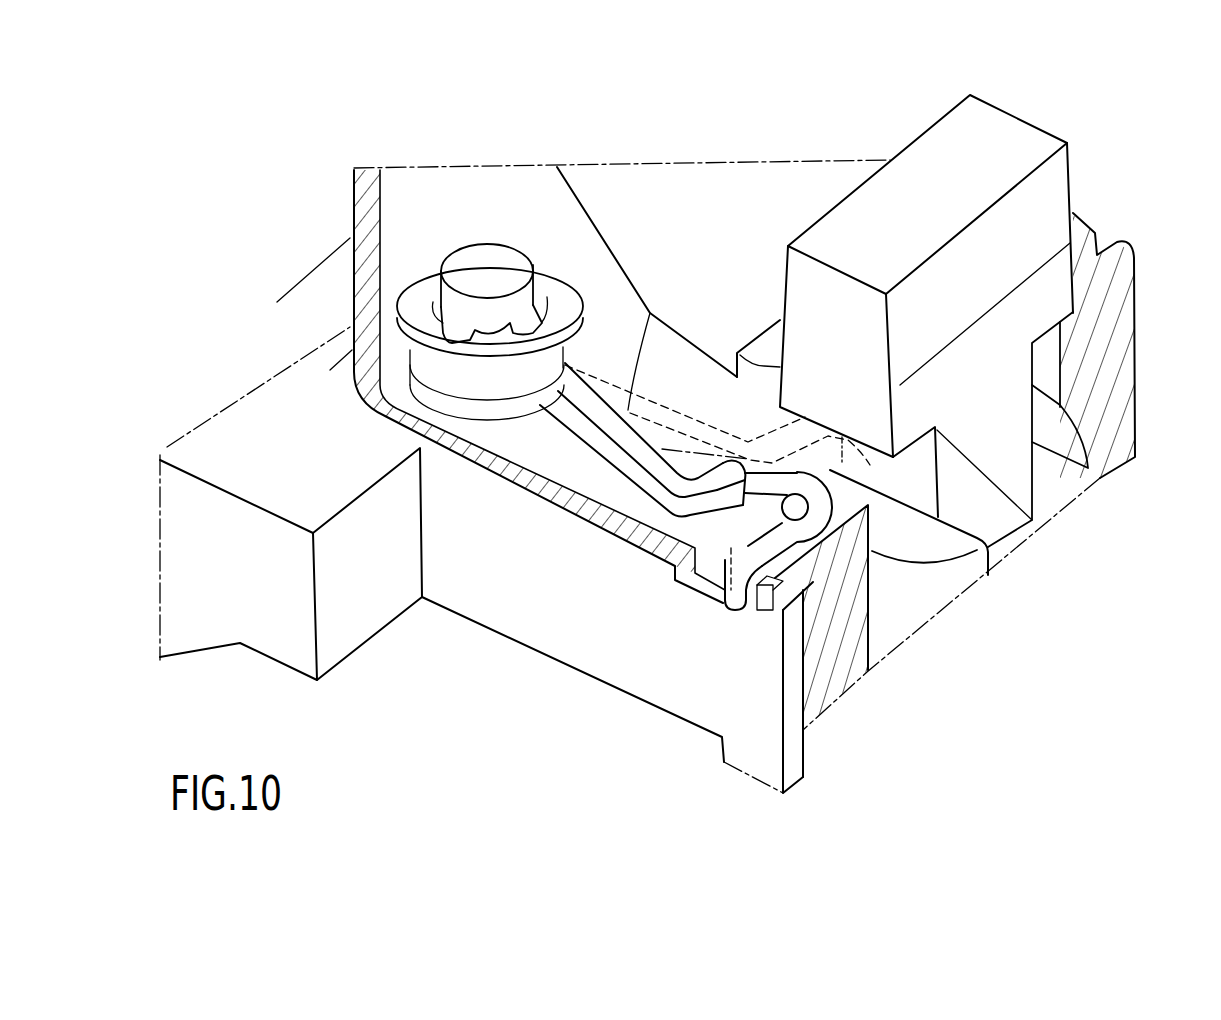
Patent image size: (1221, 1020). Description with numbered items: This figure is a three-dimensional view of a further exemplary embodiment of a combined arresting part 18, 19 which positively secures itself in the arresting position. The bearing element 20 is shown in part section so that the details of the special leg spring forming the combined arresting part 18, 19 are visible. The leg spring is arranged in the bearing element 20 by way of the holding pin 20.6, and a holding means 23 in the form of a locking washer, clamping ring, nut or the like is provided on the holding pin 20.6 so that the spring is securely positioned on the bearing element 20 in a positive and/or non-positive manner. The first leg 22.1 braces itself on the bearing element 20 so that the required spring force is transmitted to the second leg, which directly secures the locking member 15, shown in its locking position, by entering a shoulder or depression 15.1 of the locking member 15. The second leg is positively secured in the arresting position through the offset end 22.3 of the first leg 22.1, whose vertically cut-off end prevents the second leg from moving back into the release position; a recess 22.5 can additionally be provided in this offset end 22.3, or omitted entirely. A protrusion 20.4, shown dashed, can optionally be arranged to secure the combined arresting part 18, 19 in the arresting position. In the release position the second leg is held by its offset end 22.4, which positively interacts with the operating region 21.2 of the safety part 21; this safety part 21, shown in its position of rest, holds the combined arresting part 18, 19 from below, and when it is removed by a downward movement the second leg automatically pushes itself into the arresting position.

The locking member 15 is at (912, 236).
The shoulder 15.1 is at (1035, 343).
The arresting part 18 is at (820, 483).
The spring 19 is at (557, 422).
The bearing element 20 is at (522, 216).
The protrusion 20.4 is at (697, 458).
The holding pin 20.6 is at (488, 263).
The safety part 21 is at (551, 592).
The operating region 21.2 is at (758, 612).
The first leg 22.1 is at (561, 564).
The offset end 22.3 is at (690, 493).
The offset end 22.4 is at (618, 750).
The recess 22.5 is at (818, 502).
The holding means 23 is at (410, 295).